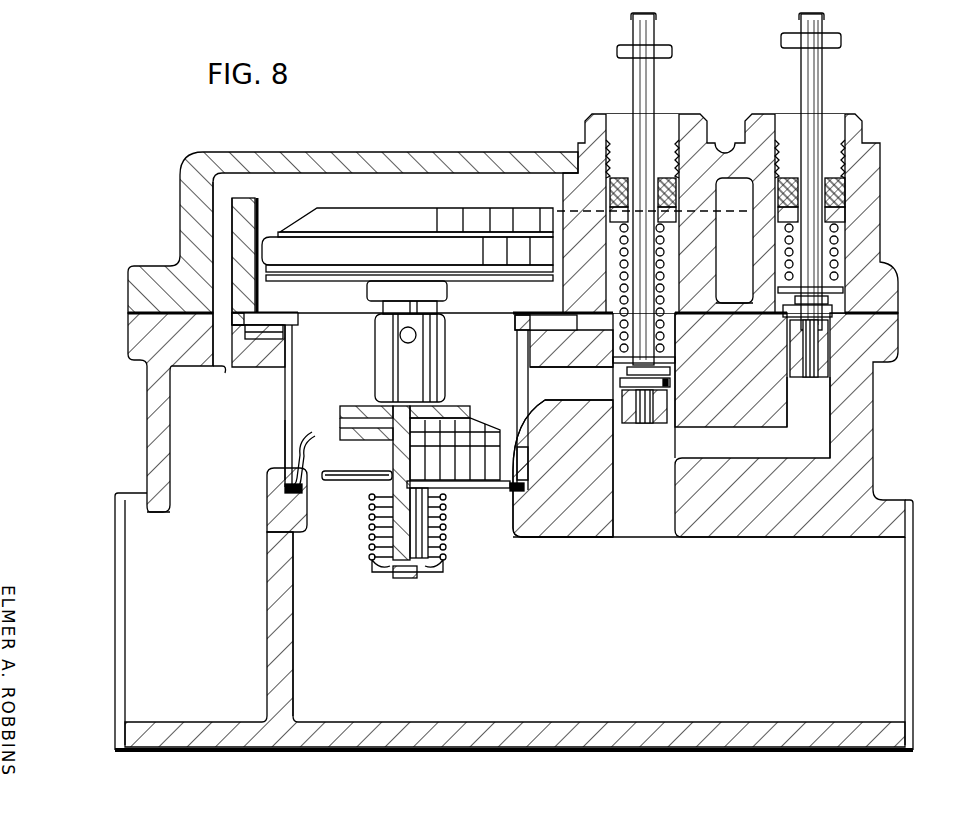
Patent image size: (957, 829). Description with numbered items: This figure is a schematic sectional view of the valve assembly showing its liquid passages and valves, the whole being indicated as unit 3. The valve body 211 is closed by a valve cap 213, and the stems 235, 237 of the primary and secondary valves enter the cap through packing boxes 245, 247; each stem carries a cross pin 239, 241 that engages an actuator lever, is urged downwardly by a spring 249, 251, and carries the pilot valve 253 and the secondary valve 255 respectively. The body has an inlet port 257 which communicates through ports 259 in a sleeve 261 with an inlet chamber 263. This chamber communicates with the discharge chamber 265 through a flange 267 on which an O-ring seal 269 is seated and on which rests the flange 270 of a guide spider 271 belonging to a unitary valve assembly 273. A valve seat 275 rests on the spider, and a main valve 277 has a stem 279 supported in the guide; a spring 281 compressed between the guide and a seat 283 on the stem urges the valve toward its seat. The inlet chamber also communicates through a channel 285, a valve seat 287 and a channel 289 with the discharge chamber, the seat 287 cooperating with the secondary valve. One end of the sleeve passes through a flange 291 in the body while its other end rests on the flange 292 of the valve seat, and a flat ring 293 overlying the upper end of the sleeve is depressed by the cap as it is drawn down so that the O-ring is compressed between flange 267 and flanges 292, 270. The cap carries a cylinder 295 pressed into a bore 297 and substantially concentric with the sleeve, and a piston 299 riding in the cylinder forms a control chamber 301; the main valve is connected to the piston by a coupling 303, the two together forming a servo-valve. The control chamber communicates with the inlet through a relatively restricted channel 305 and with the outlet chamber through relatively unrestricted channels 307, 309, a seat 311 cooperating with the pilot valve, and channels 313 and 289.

The housing shell 3 is at (882, 416).
The valve body 211 is at (158, 404).
The valve cap 213 is at (193, 163).
The stem of primary valve 235 is at (803, 74).
The stem of secondary valve 237 is at (633, 73).
The cross pin 239 is at (783, 40).
The cross pin 241 is at (620, 47).
The packing box 245 is at (850, 190).
The packing box 247 is at (612, 189).
The spring 249 is at (827, 240).
The spring 251 is at (623, 281).
The pilot valve 253 is at (843, 307).
The secondary valve 255 is at (630, 385).
The inlet port 257 is at (116, 540).
The ports 259 is at (289, 404).
The sleeve 261 is at (285, 451).
The inlet chamber 263 is at (497, 359).
The discharge chamber 265 is at (640, 612).
The flange 267 is at (300, 487).
The O-ring seal 269 is at (523, 512).
The flange of guide spider 270 is at (462, 483).
The guide spider 271 is at (320, 473).
The unitary valve assembly 273 is at (470, 403).
The valve seat 275 is at (312, 432).
The valve 277 is at (345, 408).
The stem 279 is at (392, 570).
The spring 281 is at (443, 544).
The seat 283 is at (432, 561).
The channel 285 is at (570, 392).
The valve seat 287 is at (645, 425).
The channel 289 is at (660, 482).
The flange 291 is at (274, 362).
The flange of valve seat 292 is at (462, 490).
The flat ring 293 is at (271, 315).
The cylinder 295 is at (259, 216).
The bore 297 is at (258, 210).
The piston 299 is at (323, 264).
The control chamber 301 is at (447, 201).
The coupling 303 is at (446, 333).
The restricted channel 305 is at (216, 364).
The channel 307 is at (726, 210).
The channel 309 is at (752, 268).
The seat 311 is at (818, 377).
The channel 313 is at (825, 452).